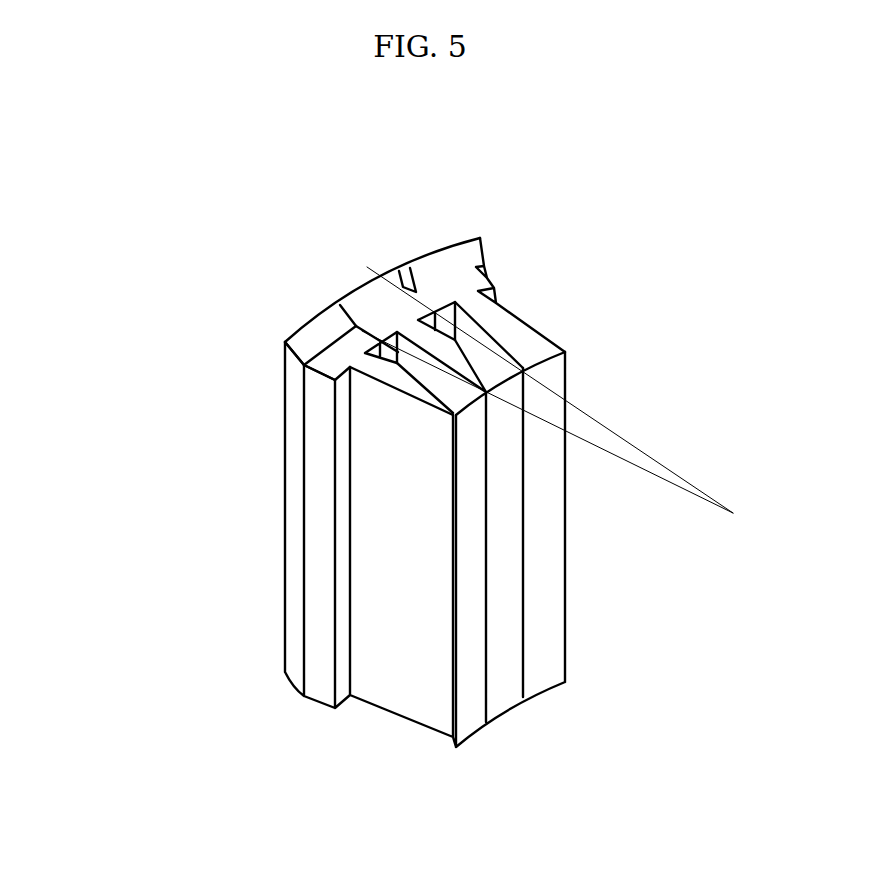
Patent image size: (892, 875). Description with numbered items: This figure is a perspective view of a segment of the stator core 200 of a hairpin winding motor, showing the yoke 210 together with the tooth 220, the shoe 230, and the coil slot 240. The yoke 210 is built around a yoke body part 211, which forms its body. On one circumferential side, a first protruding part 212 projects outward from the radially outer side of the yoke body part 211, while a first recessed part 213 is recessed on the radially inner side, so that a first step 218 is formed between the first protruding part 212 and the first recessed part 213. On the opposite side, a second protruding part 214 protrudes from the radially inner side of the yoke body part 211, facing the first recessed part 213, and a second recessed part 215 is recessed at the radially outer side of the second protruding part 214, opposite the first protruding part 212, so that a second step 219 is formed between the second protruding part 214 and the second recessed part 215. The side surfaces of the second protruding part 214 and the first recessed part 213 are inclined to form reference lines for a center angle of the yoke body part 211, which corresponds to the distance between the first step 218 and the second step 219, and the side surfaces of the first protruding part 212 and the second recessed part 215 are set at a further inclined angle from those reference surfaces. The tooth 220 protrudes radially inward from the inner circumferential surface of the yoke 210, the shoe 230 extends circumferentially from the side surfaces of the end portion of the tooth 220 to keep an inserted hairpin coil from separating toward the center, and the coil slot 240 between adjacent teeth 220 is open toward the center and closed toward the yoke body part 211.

The stator core 200 is at (625, 238).
The yoke 210 is at (112, 335).
The yoke body part 211 is at (320, 335).
The first protruding part 212 is at (341, 343).
The first recessed part 213 is at (352, 320).
The second protruding part 214 is at (308, 388).
The second recessed part 215 is at (296, 373).
The first step 218 is at (440, 292).
The second step 219 is at (358, 356).
The tooth 220 is at (426, 380).
The shoe 230 is at (448, 418).
The coil slot 240 is at (476, 334).